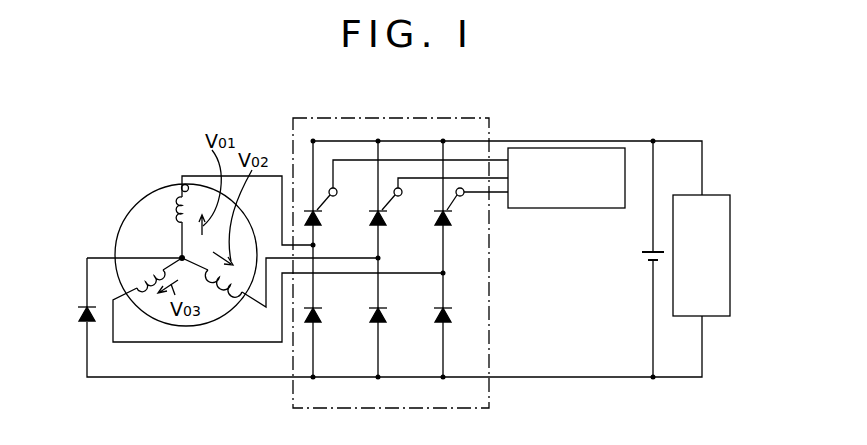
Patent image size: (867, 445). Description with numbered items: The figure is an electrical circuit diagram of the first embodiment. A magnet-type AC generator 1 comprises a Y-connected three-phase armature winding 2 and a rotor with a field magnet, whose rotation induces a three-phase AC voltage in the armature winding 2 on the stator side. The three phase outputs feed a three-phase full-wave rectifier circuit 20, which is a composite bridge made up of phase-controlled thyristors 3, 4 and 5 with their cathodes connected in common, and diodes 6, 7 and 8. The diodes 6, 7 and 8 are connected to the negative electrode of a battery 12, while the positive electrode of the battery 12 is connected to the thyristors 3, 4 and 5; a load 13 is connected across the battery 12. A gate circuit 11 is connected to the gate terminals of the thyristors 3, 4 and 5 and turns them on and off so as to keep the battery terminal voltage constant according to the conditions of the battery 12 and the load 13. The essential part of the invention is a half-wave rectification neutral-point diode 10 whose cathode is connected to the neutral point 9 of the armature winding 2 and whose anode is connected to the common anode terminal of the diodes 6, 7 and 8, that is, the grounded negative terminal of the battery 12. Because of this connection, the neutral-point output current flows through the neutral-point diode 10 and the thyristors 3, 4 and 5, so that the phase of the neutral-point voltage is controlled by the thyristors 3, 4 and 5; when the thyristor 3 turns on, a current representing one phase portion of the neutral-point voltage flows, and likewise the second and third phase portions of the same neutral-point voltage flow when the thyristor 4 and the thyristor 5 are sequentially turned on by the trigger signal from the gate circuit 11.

The magnet-type AC generator 1 is at (148, 198).
The armature winding 2 is at (186, 182).
The phase-controlled thyristor 3 is at (320, 222).
The phase-controlled thyristor 4 is at (385, 222).
The phase-controlled thyristor 5 is at (449, 222).
The diode 6 is at (320, 322).
The diode 7 is at (384, 322).
The diode 8 is at (449, 322).
The neutral point 9 is at (180, 257).
The neutral-point diode 10 is at (83, 329).
The gate circuit 11 is at (563, 150).
The battery 12 is at (645, 256).
The load 13 is at (730, 318).
The three-phase full-wave rectifier circuit 20 is at (490, 394).